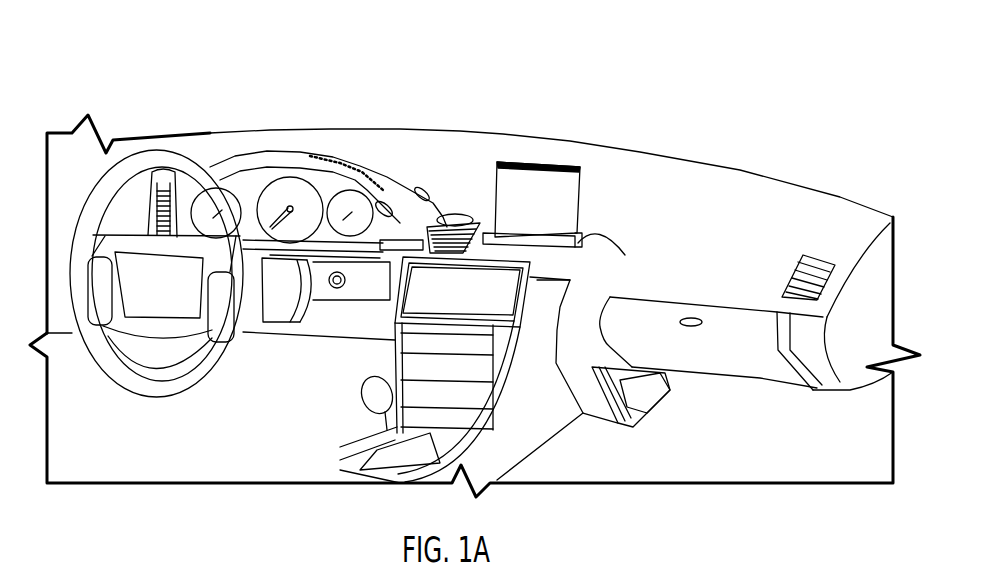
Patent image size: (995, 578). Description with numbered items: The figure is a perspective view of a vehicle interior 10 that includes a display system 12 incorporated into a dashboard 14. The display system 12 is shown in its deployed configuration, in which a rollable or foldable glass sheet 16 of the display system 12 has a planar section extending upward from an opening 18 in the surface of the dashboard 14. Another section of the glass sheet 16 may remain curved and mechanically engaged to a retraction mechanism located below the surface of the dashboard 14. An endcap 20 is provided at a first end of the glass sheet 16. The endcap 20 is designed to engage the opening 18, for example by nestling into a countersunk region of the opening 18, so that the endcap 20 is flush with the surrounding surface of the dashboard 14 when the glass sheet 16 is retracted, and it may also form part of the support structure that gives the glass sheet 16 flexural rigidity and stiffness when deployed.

The vehicle interior 10 is at (383, 92).
The display system 12 is at (586, 158).
The dashboard 14 is at (645, 177).
The rollable or foldable glass sheet 16 is at (493, 203).
The opening 18 is at (738, 337).
The endcap 20 is at (510, 162).